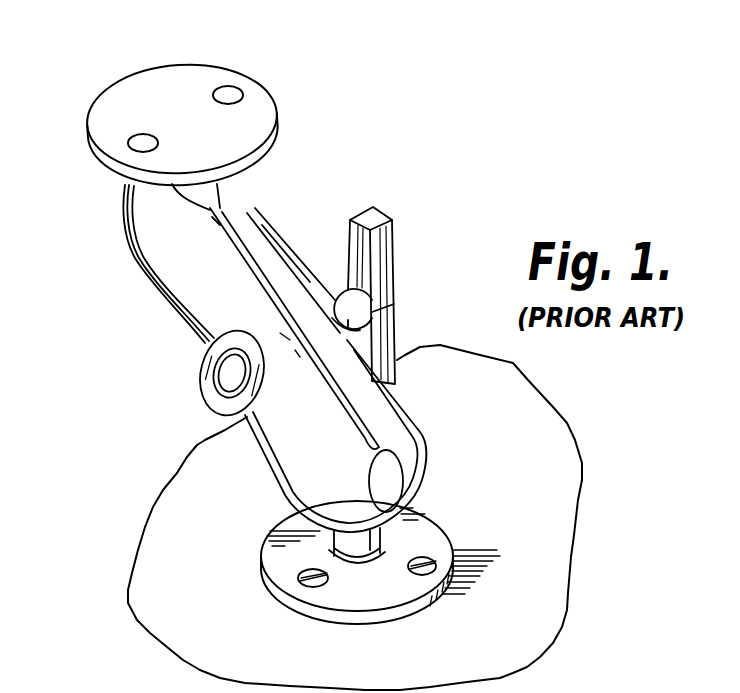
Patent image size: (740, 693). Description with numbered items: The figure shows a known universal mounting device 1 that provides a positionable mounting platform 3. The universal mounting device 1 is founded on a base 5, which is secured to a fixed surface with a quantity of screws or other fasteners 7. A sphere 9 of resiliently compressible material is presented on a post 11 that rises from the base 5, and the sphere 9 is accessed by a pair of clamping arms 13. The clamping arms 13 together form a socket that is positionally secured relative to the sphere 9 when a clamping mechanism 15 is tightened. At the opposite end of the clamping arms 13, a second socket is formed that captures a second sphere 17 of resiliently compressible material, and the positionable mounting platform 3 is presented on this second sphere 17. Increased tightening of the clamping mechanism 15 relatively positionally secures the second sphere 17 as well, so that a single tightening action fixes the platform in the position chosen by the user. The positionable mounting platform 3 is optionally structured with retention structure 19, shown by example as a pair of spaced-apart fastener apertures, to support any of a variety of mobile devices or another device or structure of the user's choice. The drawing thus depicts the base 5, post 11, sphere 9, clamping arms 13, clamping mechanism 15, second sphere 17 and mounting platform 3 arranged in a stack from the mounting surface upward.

The universal mounting device 1 is at (188, 390).
The positionable mounting platform 3 is at (272, 92).
The base 5 is at (282, 612).
The screws or other fasteners 7 is at (427, 575).
The sphere 9 is at (413, 497).
The post 11 is at (383, 540).
The clamping arms 13 is at (300, 462).
The clamping mechanism 15 is at (405, 258).
The second sphere 17 is at (205, 195).
The retention structure 19 is at (130, 107).